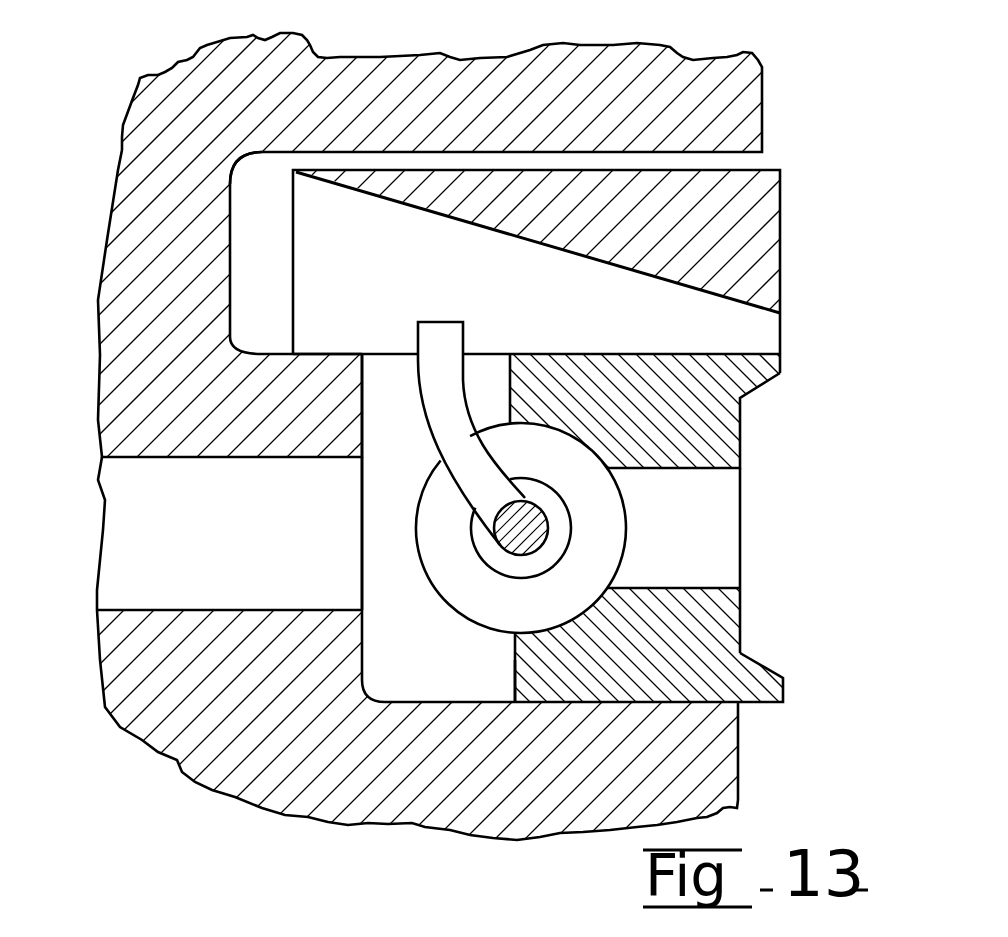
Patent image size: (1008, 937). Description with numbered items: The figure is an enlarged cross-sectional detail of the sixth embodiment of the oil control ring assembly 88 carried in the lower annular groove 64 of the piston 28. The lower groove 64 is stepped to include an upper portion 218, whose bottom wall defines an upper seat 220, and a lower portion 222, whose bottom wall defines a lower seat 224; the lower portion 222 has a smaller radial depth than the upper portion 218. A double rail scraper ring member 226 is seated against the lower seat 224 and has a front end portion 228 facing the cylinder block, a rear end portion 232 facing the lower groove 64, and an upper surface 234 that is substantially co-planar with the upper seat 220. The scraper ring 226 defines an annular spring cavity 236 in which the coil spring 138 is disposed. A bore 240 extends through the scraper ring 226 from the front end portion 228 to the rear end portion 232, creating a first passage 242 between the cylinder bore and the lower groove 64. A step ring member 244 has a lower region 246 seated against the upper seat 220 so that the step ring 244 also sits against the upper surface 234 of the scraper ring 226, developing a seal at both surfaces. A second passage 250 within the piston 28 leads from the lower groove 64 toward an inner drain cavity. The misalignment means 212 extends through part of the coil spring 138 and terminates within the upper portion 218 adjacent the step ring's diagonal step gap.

The piston 28 is at (553, 55).
The lower annular groove 64 is at (248, 158).
The upper portion 218 is at (257, 293).
The upper seat 220 is at (268, 355).
The step ring member 244 is at (747, 250).
The upper surface 234 is at (740, 352).
The lower region 246 is at (653, 357).
The first passage 242 is at (728, 525).
The bore 240 is at (715, 588).
The front end portion 228 is at (747, 623).
The double rail scraper ring member 226 is at (755, 685).
The coil spring 138 is at (433, 552).
The misalignment means 212 is at (483, 490).
The lower portion 222 is at (413, 607).
The lower seat 224 is at (465, 702).
The annular spring cavity 236 is at (512, 633).
The rear end portion 232 is at (517, 677).
The second passage 250 is at (150, 542).
The oil control ring assembly 88 is at (277, 648).